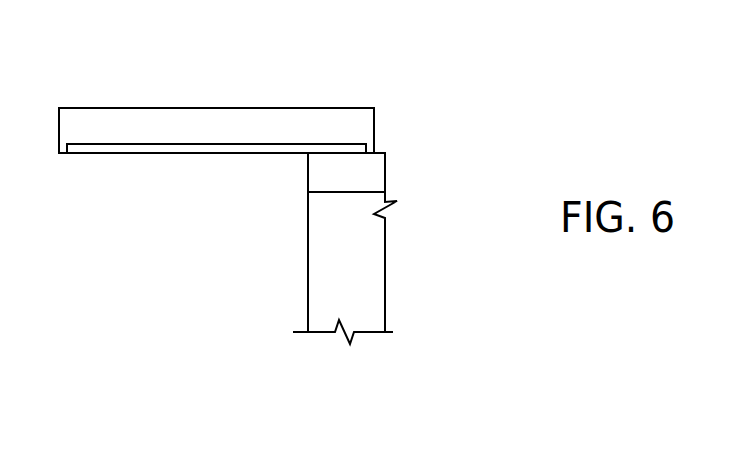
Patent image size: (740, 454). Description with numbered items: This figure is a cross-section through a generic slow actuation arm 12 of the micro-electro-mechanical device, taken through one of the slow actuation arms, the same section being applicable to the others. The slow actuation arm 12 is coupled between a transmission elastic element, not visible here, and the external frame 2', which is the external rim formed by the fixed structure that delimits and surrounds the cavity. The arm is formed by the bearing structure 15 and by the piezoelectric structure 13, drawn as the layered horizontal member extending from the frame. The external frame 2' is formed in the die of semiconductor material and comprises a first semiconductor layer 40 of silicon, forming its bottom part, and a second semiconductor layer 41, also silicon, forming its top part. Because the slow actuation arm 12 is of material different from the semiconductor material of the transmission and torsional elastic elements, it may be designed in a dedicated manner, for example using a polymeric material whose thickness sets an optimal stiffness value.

The slow actuation arm 12 is at (243, 127).
The piezoelectric structure 13 is at (118, 145).
The bearing structure 15 is at (142, 127).
The first semiconductor layer 40 is at (348, 242).
The second semiconductor layer 41 is at (357, 180).
The external frame 2' is at (270, 262).